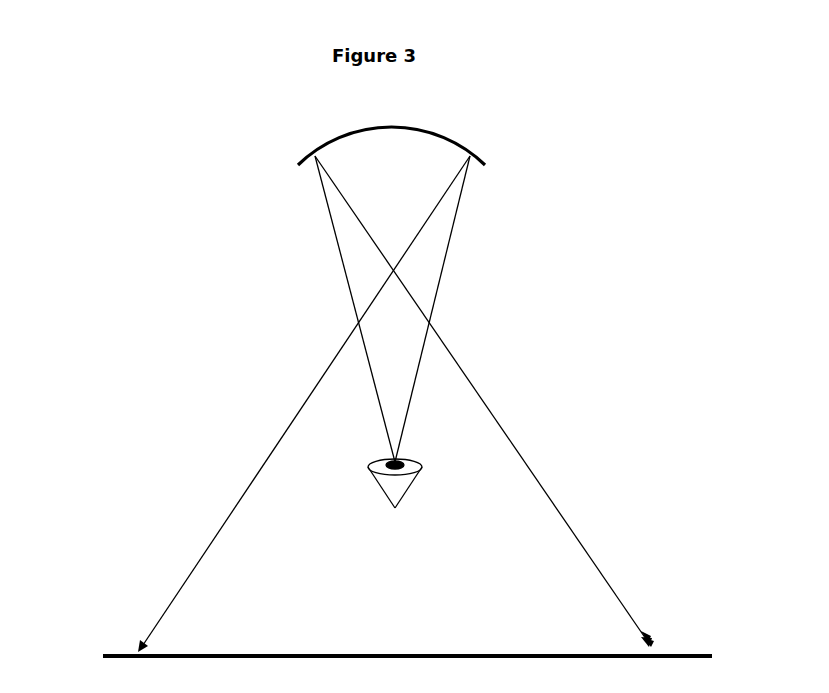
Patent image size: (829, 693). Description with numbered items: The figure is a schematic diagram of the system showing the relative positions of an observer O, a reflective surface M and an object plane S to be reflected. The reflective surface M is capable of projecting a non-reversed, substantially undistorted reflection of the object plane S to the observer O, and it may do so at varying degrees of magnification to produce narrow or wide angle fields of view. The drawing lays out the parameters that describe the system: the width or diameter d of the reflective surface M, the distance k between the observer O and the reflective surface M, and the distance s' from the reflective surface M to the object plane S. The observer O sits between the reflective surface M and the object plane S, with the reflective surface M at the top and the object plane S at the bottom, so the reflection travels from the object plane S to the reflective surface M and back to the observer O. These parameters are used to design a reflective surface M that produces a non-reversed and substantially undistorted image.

The reflective surface M is at (477, 158).
The observer O is at (395, 508).
The object plane S is at (103, 657).
The width or diameter of the reflective surface d is at (484, 78).
The distance between the observer and the reflective surface k is at (253, 164).
The distance from the reflective surface to the object plane s' is at (691, 407).